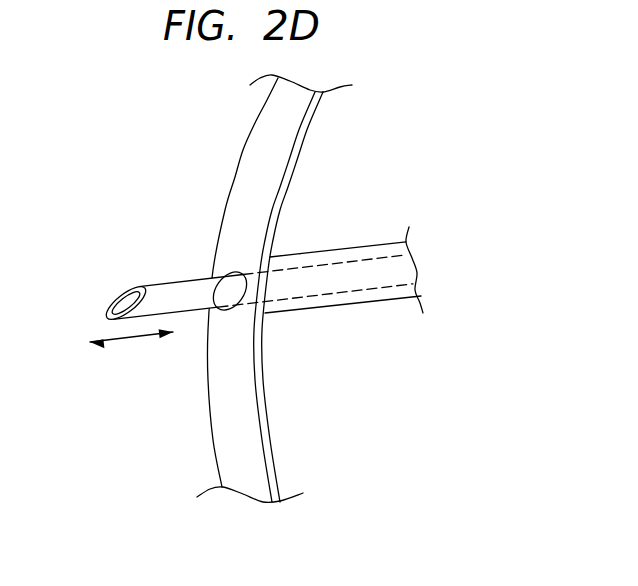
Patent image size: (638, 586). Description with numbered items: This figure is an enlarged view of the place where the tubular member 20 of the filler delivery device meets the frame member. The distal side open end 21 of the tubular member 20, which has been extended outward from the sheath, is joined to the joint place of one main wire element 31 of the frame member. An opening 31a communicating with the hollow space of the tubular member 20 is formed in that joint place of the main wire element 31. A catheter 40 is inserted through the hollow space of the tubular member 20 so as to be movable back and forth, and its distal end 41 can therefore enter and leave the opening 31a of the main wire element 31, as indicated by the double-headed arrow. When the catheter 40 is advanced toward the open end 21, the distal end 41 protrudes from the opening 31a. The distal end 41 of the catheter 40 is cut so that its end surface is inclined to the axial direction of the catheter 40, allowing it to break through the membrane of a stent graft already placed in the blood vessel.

The tubular member 20 is at (382, 300).
The distal side open end 21 is at (290, 253).
The main wire element 31 is at (213, 440).
The opening 31a is at (215, 311).
The catheter 40 is at (173, 278).
The distal end 41 is at (117, 294).